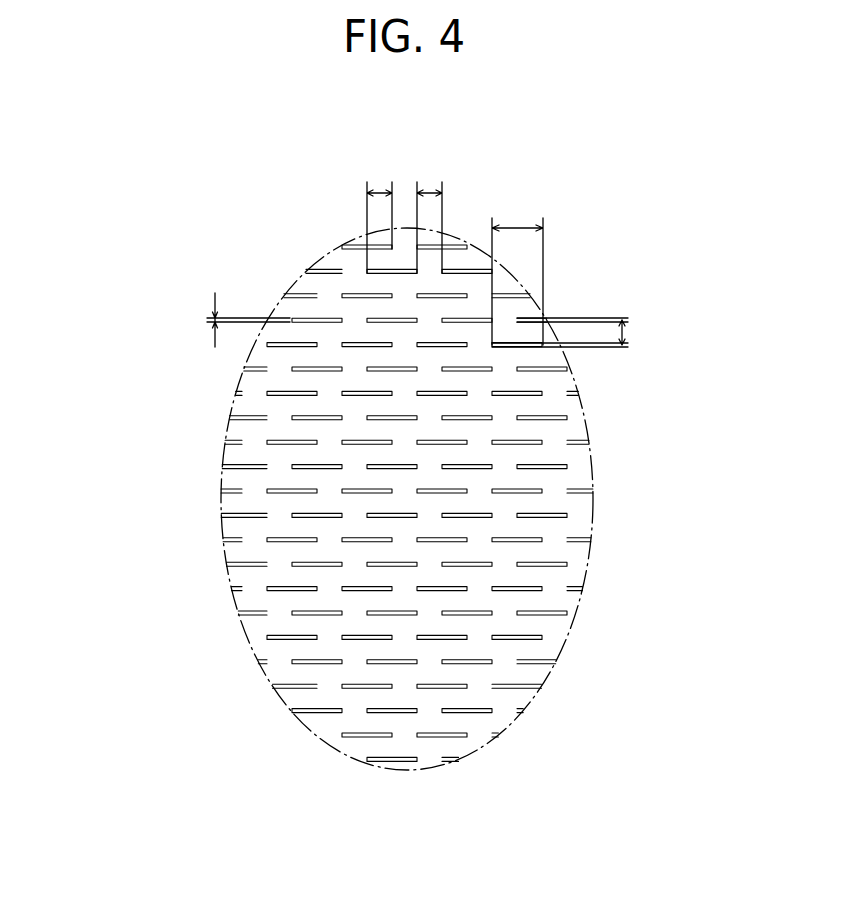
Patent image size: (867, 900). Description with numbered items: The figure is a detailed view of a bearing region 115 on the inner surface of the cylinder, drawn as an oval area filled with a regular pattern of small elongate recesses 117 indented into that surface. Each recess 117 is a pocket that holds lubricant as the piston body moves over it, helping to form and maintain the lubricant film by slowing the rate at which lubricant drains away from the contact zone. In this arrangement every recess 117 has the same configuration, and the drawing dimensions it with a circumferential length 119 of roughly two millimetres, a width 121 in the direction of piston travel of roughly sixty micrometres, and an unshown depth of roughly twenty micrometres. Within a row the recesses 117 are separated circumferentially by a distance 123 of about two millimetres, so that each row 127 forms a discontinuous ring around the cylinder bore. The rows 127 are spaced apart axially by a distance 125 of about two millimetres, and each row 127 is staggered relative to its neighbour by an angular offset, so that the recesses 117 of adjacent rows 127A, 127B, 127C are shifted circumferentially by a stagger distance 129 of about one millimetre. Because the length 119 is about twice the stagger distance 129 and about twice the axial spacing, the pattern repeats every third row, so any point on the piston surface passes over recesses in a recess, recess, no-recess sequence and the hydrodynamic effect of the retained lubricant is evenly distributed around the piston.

The bearing region 115 is at (171, 594).
The recess 117 is at (527, 590).
The length 119 is at (531, 227).
The width 121 is at (213, 303).
The distance 123 is at (428, 192).
The distance 125 is at (624, 333).
The row 127 is at (305, 436).
The row 127A is at (208, 434).
The row 127B is at (208, 459).
The row 127C is at (202, 487).
The distance 129 is at (378, 192).